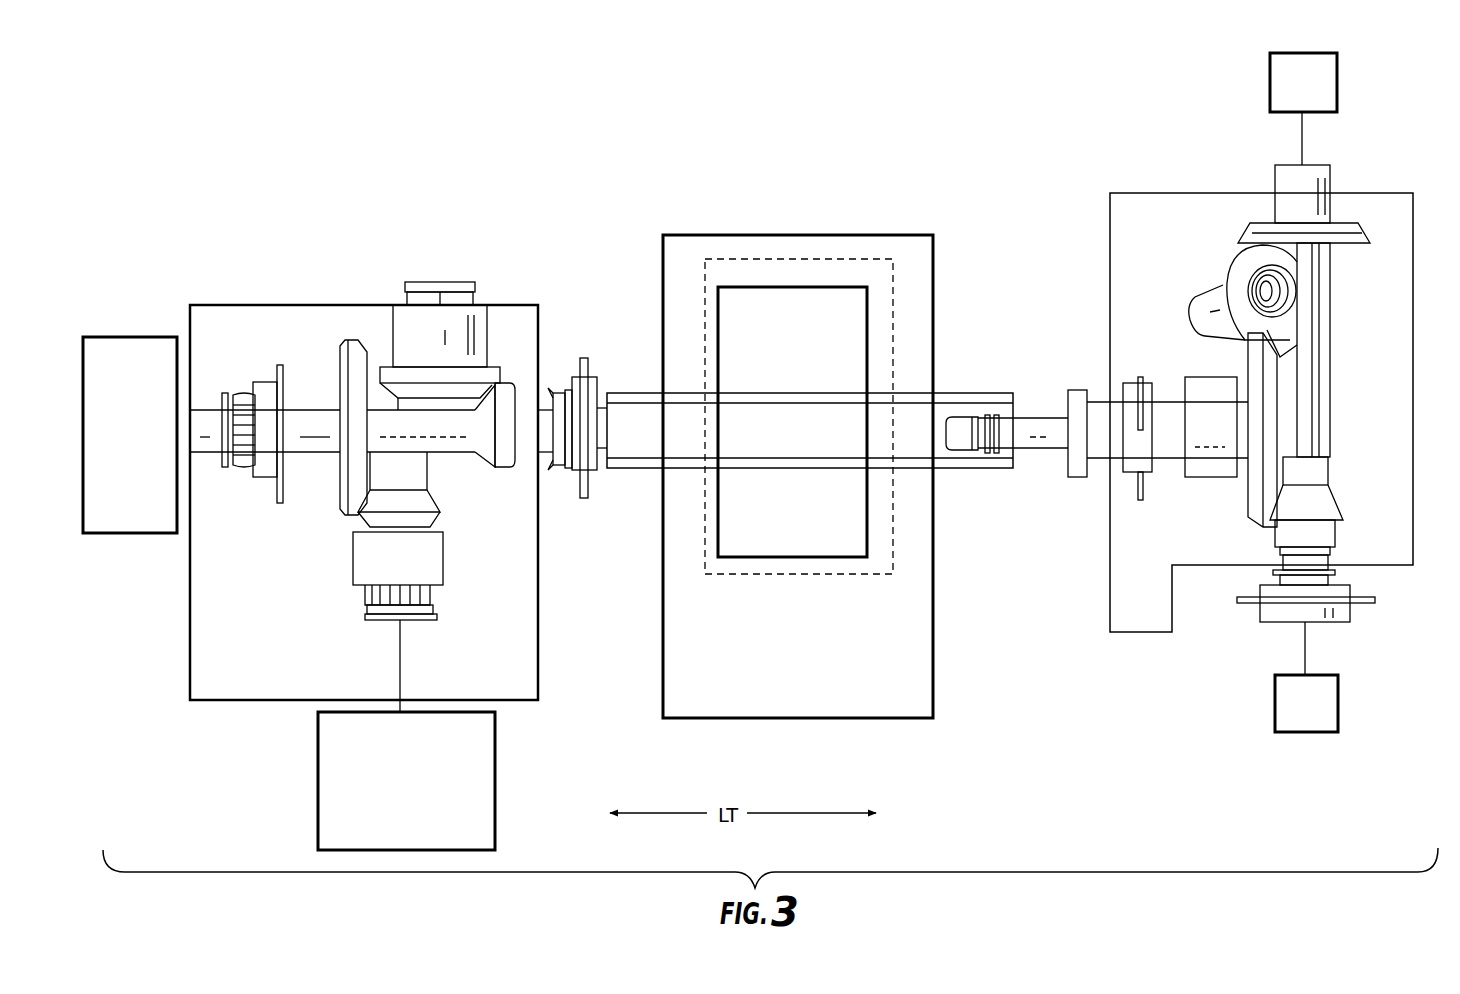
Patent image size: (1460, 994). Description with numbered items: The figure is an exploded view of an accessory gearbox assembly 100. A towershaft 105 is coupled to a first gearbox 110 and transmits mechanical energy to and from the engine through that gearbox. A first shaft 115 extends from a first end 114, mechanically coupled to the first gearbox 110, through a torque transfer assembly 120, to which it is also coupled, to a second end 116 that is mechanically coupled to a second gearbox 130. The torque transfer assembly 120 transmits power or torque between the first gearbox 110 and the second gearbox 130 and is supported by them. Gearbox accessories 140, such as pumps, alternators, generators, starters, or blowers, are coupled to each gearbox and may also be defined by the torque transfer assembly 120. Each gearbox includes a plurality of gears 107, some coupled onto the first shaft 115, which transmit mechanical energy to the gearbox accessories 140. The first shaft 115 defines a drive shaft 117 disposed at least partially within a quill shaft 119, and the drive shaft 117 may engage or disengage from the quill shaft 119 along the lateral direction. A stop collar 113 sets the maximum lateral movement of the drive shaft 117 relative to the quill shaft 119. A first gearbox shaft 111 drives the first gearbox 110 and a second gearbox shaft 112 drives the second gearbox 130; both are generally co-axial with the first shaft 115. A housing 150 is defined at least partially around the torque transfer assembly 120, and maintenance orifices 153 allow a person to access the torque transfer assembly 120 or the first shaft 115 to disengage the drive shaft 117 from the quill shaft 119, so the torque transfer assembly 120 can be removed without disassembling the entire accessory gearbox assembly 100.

The accessory gearbox assembly 100 is at (133, 281).
The towershaft 105 is at (1203, 281).
The gears 107 is at (246, 470).
The first gearbox 110 is at (1414, 298).
The first gearbox shaft 111 is at (1100, 406).
The second gearbox shaft 112 is at (600, 455).
The stop collar 113 is at (1075, 478).
The first end 114 is at (1041, 393).
The first shaft 115 is at (609, 391).
The second end 116 is at (558, 481).
The drive shaft 117 is at (639, 464).
The quill shaft 119 is at (965, 451).
The torque transfer assembly 120 is at (774, 355).
The second gearbox 130 is at (227, 677).
The gearbox accessories 140 is at (114, 444).
The housing 150 is at (874, 695).
The maintenance orifices 153 is at (736, 576).